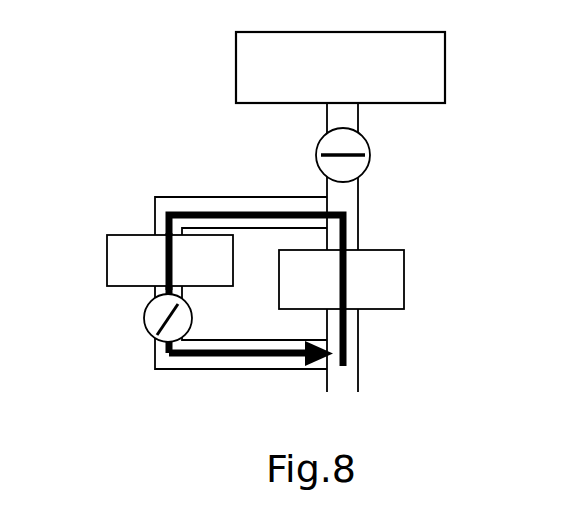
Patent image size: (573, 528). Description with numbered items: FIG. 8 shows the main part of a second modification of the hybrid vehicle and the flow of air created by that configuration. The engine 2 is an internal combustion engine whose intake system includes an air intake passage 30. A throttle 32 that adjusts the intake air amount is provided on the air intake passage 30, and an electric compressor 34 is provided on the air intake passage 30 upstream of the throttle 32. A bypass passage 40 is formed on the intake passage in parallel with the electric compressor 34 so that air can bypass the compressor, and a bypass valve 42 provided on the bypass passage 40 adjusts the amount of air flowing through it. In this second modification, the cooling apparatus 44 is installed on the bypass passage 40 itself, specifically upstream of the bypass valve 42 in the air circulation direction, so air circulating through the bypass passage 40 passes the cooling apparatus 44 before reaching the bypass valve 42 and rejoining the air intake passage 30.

The engine 2 is at (236, 68).
The air intake passage 30 is at (358, 205).
The throttle 32 is at (317, 148).
The electric compressor 34 is at (404, 268).
The bypass passage 40 is at (155, 215).
The bypass valve 42 is at (144, 318).
The cooling apparatus 44 is at (107, 265).